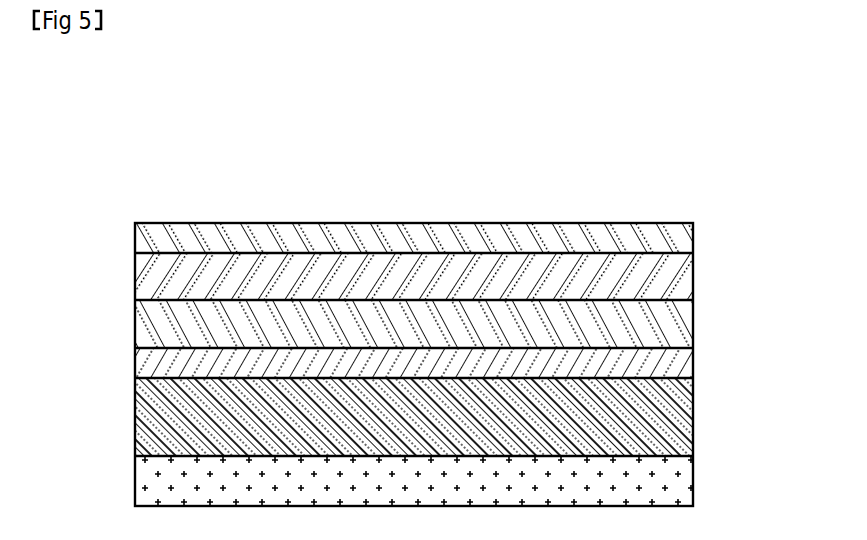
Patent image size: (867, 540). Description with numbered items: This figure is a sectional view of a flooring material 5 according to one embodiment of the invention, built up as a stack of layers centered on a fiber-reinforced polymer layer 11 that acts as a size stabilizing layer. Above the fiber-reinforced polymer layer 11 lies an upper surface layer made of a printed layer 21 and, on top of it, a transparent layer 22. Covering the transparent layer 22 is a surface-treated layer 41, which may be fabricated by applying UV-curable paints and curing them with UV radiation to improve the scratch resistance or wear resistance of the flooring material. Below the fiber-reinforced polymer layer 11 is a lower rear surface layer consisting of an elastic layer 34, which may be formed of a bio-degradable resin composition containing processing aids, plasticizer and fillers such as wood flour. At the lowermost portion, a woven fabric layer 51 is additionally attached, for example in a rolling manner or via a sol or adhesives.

The flooring material 5 is at (710, 174).
The fiber-reinforced polymer layer 11 is at (693, 360).
The printed layer 21 is at (693, 320).
The transparent layer 22 is at (693, 270).
The elastic layer 34 is at (693, 421).
The surface-treated layer 41 is at (693, 236).
The woven fabric layer 51 is at (693, 480).